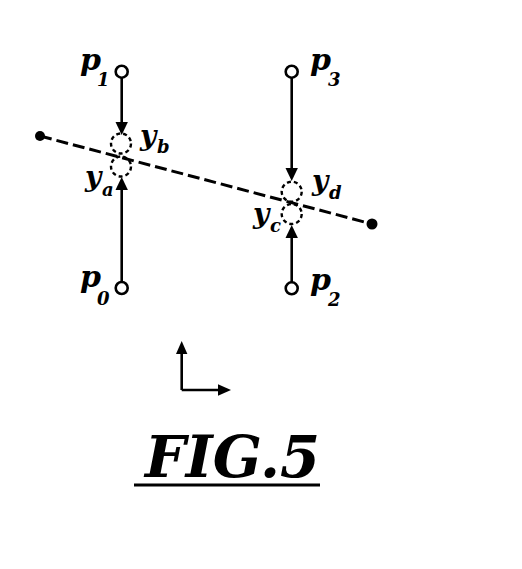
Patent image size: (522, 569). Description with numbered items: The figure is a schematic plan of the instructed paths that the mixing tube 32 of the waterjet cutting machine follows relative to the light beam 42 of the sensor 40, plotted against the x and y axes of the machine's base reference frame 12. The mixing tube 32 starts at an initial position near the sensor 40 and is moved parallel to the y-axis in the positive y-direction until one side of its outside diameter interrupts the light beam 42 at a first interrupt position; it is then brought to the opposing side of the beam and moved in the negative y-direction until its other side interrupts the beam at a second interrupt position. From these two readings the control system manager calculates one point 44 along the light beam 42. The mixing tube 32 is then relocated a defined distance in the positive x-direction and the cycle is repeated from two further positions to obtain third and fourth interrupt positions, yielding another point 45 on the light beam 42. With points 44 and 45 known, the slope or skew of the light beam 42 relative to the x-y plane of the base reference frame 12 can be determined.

The base reference frame 12 is at (178, 376).
The mixing tube 32 is at (122, 65).
The sensor 40 is at (373, 221).
The light beam 42 is at (207, 179).
The point 44 is at (131, 160).
The point 45 is at (299, 207).